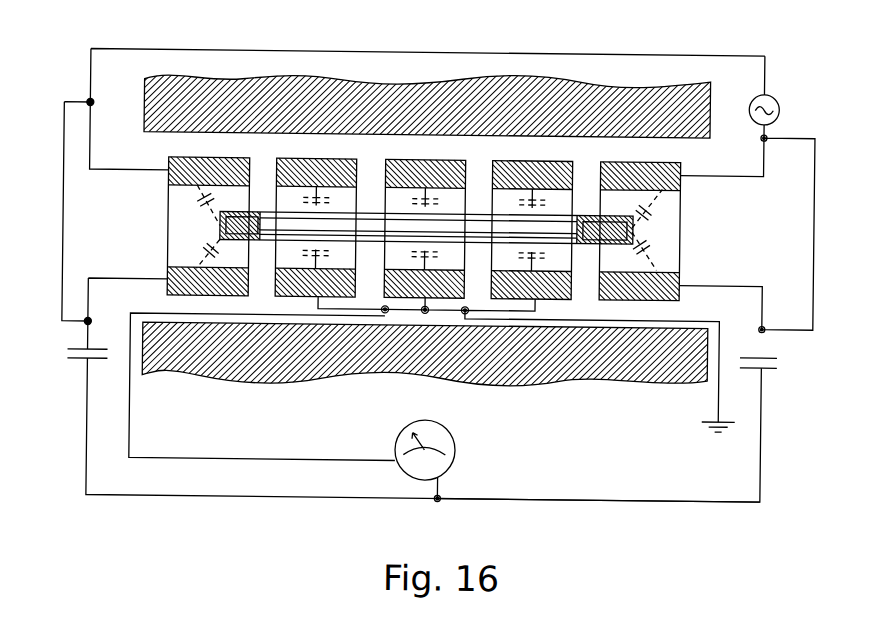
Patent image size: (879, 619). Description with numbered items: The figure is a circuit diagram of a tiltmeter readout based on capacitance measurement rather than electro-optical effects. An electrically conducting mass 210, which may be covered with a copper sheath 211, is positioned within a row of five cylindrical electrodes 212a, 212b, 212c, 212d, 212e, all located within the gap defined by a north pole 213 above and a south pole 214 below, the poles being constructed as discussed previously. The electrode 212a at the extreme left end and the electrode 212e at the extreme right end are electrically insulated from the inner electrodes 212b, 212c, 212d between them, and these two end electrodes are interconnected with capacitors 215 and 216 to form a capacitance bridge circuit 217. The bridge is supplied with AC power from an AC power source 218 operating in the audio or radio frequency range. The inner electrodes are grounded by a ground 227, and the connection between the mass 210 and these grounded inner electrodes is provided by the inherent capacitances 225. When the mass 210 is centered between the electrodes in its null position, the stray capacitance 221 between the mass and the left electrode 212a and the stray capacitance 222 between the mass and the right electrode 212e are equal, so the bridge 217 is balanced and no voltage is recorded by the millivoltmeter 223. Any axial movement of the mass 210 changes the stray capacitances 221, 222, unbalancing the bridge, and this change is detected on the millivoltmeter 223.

The north pole 213 is at (440, 114).
The south pole 214 is at (436, 358).
The cylindrical electrode 212a is at (233, 170).
The cylindrical electrode 212b is at (343, 169).
The cylindrical electrode 212c is at (454, 168).
The cylindrical electrode 212d is at (560, 167).
The cylindrical electrode 212e is at (670, 169).
The inherent capacitance 225 is at (513, 202).
The mass 210 is at (594, 218).
The copper sheath 211 is at (571, 236).
The stray capacitance 221 is at (184, 228).
The stray capacitance 222 is at (662, 230).
The AC power source 218 is at (770, 93).
The capacitor 215 is at (78, 362).
The capacitor 216 is at (764, 364).
The millivoltmeter 223 is at (444, 438).
The ground 227 is at (713, 429).
The capacitance bridge circuit 217 is at (584, 499).